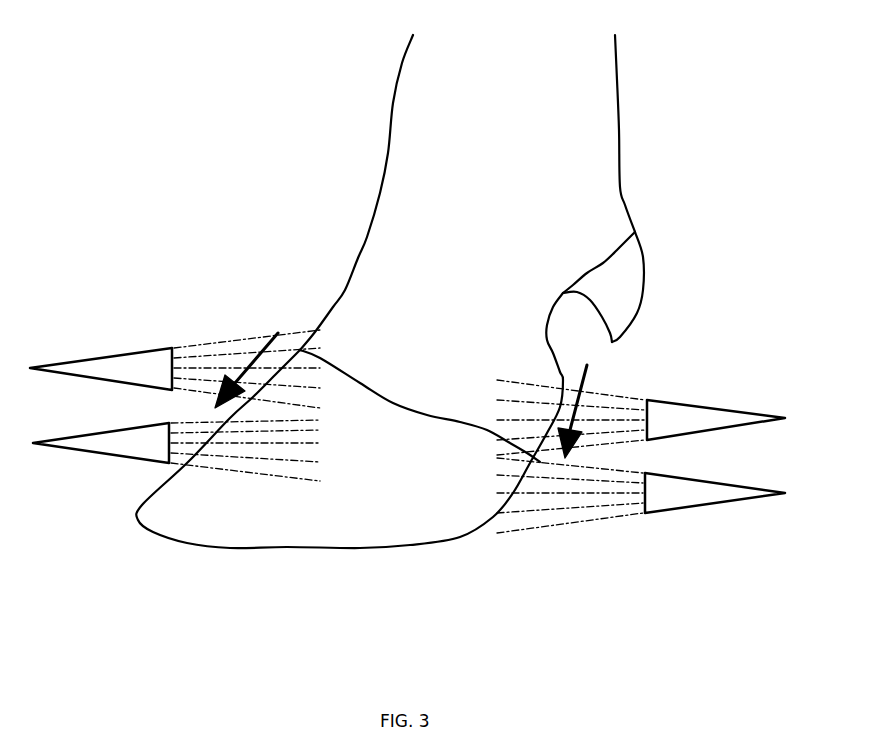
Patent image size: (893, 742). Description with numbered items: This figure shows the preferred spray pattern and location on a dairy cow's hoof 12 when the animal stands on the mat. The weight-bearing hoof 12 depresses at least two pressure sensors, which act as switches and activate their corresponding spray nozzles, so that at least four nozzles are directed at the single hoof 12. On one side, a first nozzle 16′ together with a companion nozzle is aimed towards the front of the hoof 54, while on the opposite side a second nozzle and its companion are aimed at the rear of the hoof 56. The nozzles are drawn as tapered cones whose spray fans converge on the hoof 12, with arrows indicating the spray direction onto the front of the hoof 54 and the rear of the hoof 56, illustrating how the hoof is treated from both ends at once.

The hoof 12 is at (665, 143).
The first nozzle 16′ is at (137, 367).
The front of the hoof 54 is at (228, 505).
The rear of the hoof 56 is at (528, 357).